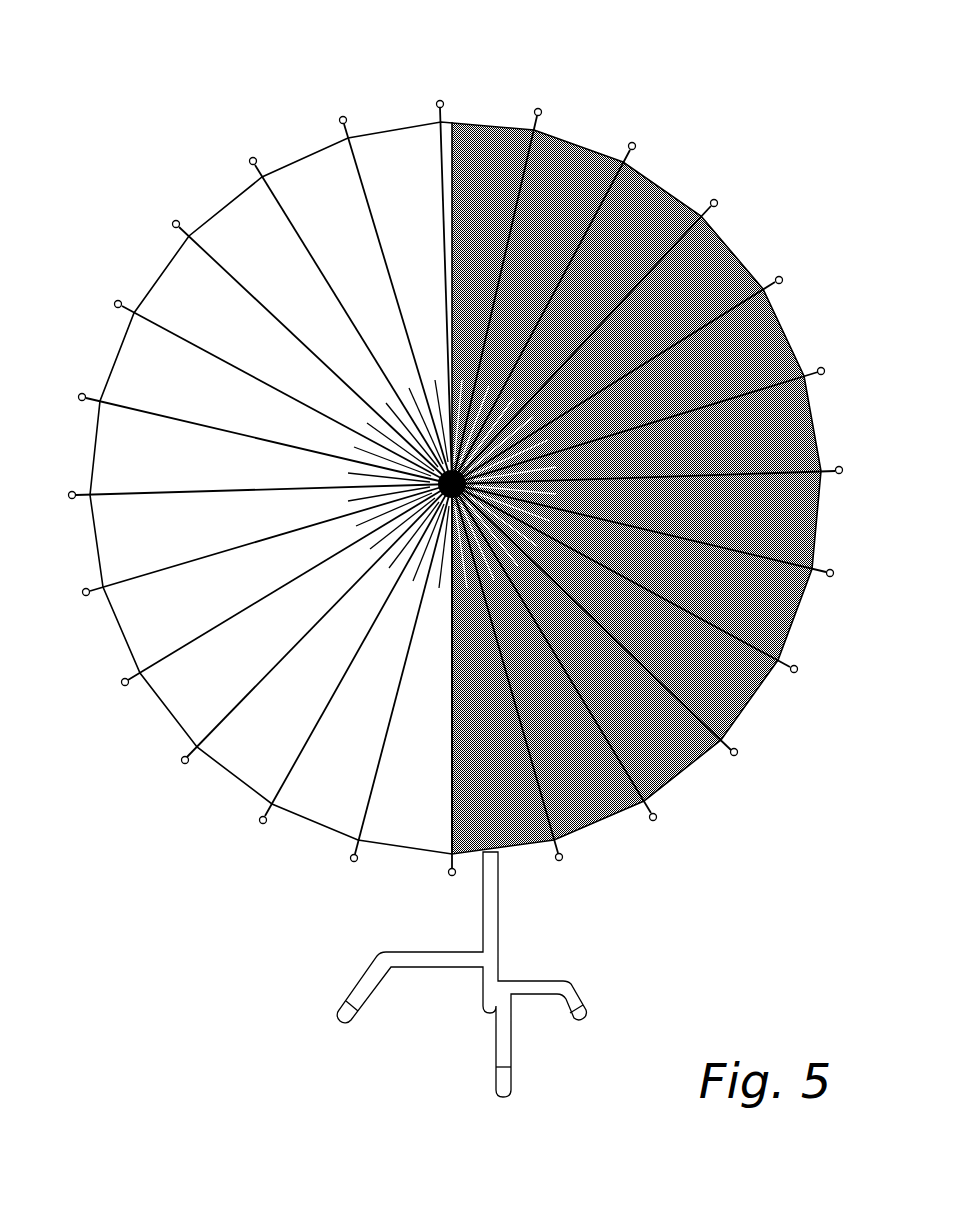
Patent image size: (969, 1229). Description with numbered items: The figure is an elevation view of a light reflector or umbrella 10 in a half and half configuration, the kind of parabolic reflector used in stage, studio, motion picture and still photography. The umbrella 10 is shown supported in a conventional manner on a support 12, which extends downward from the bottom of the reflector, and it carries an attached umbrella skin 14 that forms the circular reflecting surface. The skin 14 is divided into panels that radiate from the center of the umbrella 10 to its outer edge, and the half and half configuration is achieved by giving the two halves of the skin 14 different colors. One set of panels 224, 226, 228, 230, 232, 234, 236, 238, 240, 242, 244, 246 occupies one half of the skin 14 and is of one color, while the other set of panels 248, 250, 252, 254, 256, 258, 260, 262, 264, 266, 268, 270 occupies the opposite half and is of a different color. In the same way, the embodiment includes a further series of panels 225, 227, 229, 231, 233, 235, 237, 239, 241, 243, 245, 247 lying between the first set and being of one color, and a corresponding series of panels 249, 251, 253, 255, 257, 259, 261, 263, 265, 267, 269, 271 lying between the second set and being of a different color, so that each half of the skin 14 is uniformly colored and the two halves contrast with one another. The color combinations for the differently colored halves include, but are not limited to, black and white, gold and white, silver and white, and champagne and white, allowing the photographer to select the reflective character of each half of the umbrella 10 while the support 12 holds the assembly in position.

The umbrella 10 is at (152, 68).
The support 12 is at (492, 983).
The umbrella skin 14 is at (712, 208).
The panel 224 is at (489, 161).
The panel 226 is at (571, 182).
The panel 228 is at (645, 223).
The panel 230 is at (706, 282).
The panel 232 is at (750, 354).
The panel 234 is at (773, 436).
The panel 236 is at (775, 522).
The panel 238 is at (754, 605).
The panel 240 is at (711, 680).
The panel 242 is at (651, 741).
The panel 244 is at (576, 784).
The panel 246 is at (517, 818).
The panel 248 is at (406, 806).
The panel 250 is at (326, 783).
The panel 252 is at (254, 741).
The panel 254 is at (195, 683).
The panel 256 is at (153, 611).
The panel 258 is at (130, 530).
The panel 260 is at (129, 446).
The panel 262 is at (150, 363).
The panel 264 is at (192, 289).
The panel 266 is at (251, 229).
The panel 268 is at (324, 185).
The panel 270 is at (405, 162).
The panel 225 is at (464, 367).
The panel 227 is at (493, 373).
The panel 229 is at (521, 388).
The panel 231 is at (543, 409).
The panel 233 is at (559, 435).
The panel 235 is at (568, 465).
The panel 237 is at (569, 496).
The panel 239 is at (562, 526).
The panel 241 is at (547, 553).
The panel 243 is at (526, 576).
The panel 245 is at (499, 592).
The panel 247 is at (468, 601).
The panel 249 is at (437, 601).
The panel 251 is at (408, 593).
The panel 253 is at (381, 579).
The panel 255 is at (360, 558).
The panel 257 is at (344, 532).
The panel 259 is at (335, 503).
The panel 261 is at (335, 472).
The panel 263 is at (342, 442).
The panel 265 is at (356, 415).
The panel 267 is at (377, 393).
The panel 269 is at (404, 376).
The panel 271 is at (433, 368).